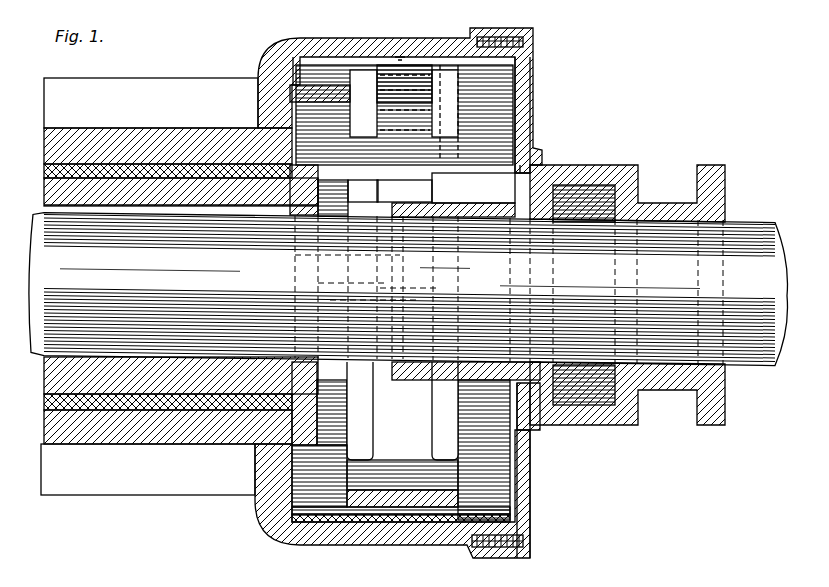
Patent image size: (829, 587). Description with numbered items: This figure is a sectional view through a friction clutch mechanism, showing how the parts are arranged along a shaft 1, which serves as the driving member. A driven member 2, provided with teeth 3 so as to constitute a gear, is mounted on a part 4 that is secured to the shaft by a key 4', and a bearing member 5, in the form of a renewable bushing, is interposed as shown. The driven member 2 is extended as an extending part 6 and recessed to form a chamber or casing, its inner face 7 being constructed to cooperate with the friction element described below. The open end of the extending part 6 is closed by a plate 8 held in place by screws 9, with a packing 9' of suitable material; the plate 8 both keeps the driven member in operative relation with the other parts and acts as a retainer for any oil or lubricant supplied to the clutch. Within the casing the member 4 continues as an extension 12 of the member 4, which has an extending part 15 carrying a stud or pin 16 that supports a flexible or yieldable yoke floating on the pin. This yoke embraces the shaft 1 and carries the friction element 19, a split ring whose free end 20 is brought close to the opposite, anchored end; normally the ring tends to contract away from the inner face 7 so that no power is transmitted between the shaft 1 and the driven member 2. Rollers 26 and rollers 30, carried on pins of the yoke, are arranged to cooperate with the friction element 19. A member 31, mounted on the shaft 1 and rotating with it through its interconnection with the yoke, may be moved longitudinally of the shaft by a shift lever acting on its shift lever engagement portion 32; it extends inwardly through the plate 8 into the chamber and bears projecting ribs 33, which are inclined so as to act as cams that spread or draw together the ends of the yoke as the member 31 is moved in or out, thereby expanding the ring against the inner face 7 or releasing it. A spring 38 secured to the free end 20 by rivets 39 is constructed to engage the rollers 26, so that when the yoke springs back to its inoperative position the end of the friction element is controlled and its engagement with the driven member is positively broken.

The shaft 1 is at (740, 222).
The driven member 2 is at (52, 429).
The teeth 3 is at (93, 487).
The part 4 is at (403, 261).
The key 4' is at (164, 198).
The bearing member 5 is at (46, 403).
The extending part 6 is at (447, 70).
The inner face 7 is at (346, 57).
The plate 8 is at (531, 100).
The screws 9 is at (516, 36).
The packing 9' is at (516, 549).
The extension of member 4 12 is at (308, 193).
The extending part 15 is at (333, 95).
The stud or pin 16 is at (307, 113).
The friction element 19 is at (300, 546).
The free end 20 is at (462, 65).
The rollers 26 is at (310, 80).
The rollers 30 is at (401, 516).
The member 31 is at (577, 168).
The shift lever engagement portion 32 is at (665, 202).
The projecting ribs 33 is at (528, 145).
The spring 38 is at (410, 85).
The rivets 39 is at (395, 47).